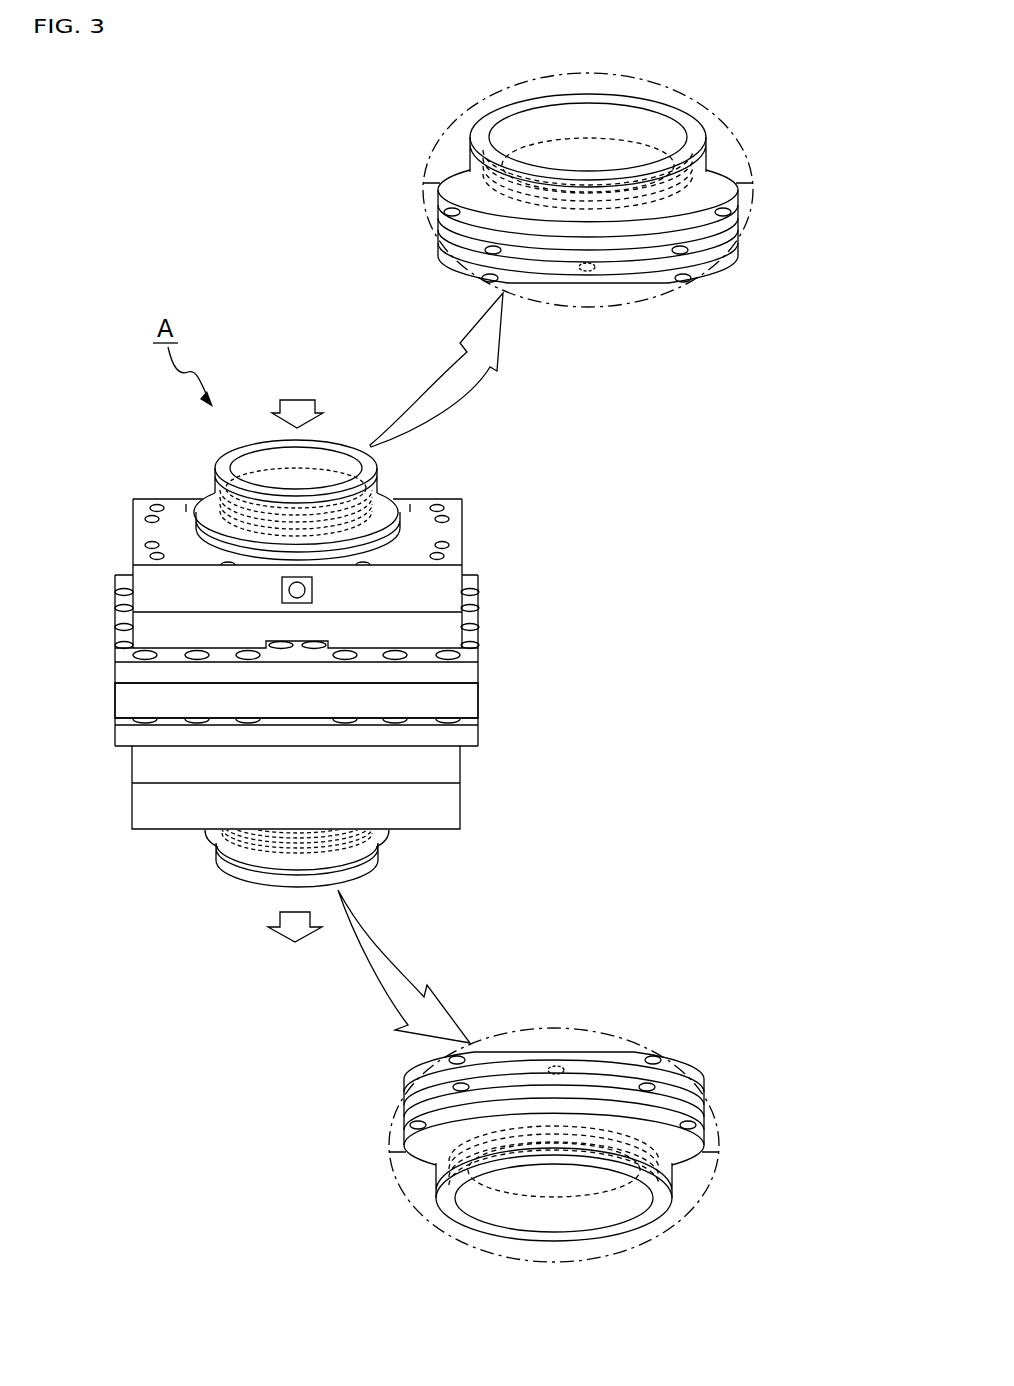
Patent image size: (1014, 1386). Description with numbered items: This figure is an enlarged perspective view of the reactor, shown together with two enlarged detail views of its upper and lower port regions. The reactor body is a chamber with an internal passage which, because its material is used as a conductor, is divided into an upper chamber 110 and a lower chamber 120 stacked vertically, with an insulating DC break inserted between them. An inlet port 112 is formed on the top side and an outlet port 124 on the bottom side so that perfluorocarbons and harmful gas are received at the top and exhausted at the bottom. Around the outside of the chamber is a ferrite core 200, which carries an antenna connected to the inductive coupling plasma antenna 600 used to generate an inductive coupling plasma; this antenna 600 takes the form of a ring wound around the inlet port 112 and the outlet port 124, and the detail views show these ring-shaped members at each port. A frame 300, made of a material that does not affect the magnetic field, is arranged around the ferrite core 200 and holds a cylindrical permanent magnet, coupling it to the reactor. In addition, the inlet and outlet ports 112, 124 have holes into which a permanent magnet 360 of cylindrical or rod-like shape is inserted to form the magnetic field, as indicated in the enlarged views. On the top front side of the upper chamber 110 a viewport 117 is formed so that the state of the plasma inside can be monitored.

The upper chamber 110 is at (451, 529).
The inlet port 112 is at (327, 456).
The viewport 117 is at (281, 593).
The lower chamber 120 is at (447, 767).
The outlet port 124 is at (250, 882).
The ferrite core 200 is at (468, 697).
The frame 300 is at (467, 672).
The permanent magnet 360 is at (683, 253).
The inductive coupling plasma antenna 600 is at (390, 510).